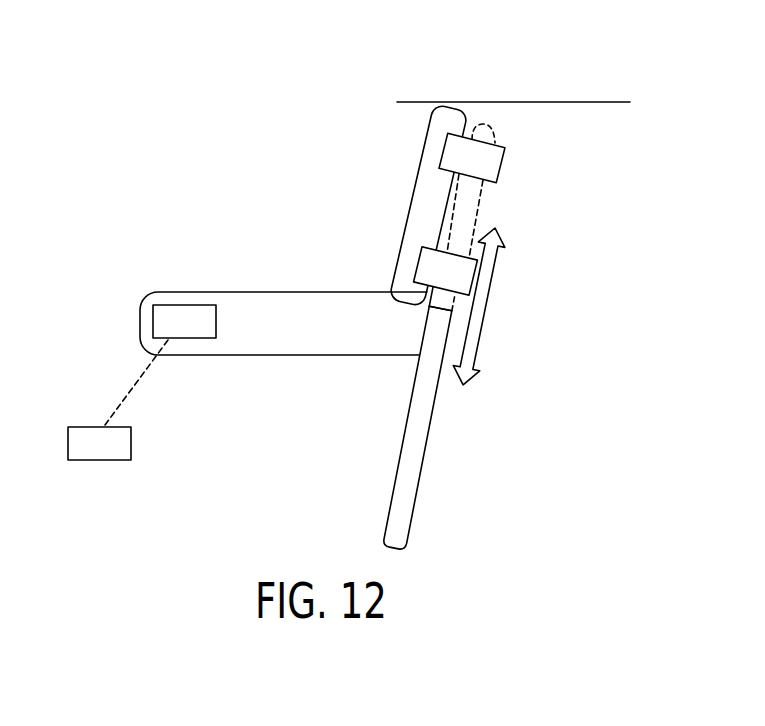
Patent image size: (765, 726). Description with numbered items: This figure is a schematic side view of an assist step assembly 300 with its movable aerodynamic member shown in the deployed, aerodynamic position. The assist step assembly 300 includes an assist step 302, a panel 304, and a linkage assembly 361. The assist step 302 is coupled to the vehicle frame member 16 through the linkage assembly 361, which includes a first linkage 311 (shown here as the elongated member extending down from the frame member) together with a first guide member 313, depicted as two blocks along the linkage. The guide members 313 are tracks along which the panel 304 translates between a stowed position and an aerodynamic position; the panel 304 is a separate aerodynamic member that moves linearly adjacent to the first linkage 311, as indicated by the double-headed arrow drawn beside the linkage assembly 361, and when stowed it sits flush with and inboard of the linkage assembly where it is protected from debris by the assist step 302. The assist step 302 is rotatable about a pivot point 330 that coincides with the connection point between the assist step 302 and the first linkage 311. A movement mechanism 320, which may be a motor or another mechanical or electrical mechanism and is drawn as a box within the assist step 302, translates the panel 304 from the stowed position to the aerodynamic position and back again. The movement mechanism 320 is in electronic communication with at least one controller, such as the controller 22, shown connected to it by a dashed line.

The assist step assembly 300 is at (143, 114).
The vehicle frame member 16 is at (537, 103).
The controller 22 is at (131, 445).
The assist step 302 is at (285, 302).
The panel 304 is at (397, 468).
The first linkage 311 is at (413, 196).
The first guide member 313 is at (447, 162).
The movement mechanism 320 is at (163, 312).
The pivot point 330 is at (404, 340).
The linkage assembly 361 is at (517, 296).